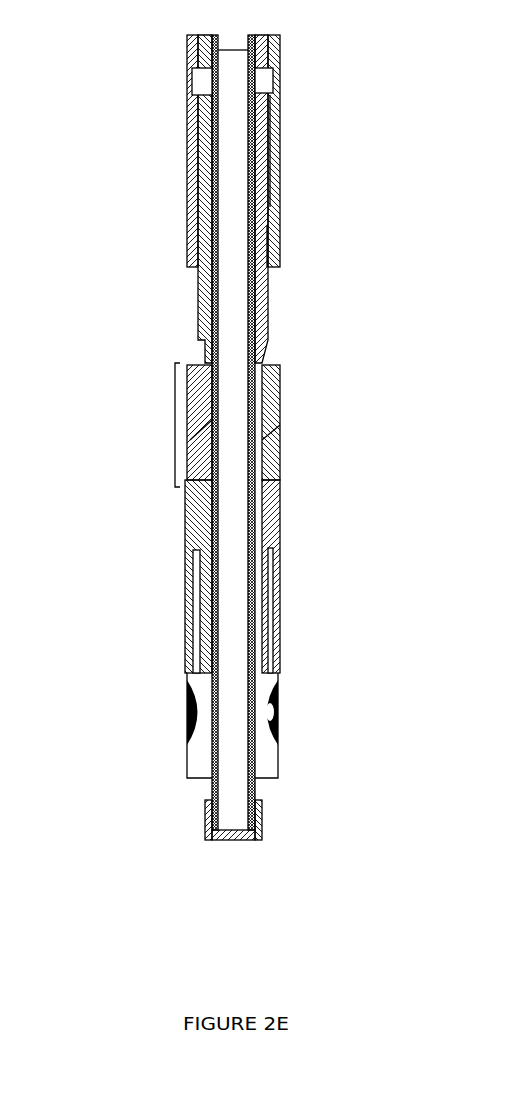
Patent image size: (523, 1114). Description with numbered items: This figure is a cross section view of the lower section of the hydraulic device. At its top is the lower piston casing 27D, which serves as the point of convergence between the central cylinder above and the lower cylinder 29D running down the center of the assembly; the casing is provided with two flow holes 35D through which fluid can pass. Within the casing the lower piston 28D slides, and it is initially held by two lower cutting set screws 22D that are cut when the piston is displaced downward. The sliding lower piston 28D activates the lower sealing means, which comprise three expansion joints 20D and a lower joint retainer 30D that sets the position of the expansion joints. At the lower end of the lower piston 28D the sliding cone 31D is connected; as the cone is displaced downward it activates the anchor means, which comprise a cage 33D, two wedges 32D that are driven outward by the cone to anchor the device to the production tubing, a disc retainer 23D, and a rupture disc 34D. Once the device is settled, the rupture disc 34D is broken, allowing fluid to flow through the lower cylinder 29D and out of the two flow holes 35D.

The expansion joints 20D is at (175, 426).
The cutting set screws 22D is at (190, 208).
The disc retainer 23D is at (207, 838).
The lower piston casing 27D is at (272, 101).
The lower piston 28D is at (264, 187).
The lower cylinder 29D is at (251, 313).
The lower joint retainer 30D is at (270, 523).
The sliding cone 31D is at (264, 602).
The wedges 32D is at (186, 691).
The cage 33D is at (190, 763).
The rupture disc 34D is at (237, 830).
The flow holes 35D is at (205, 90).